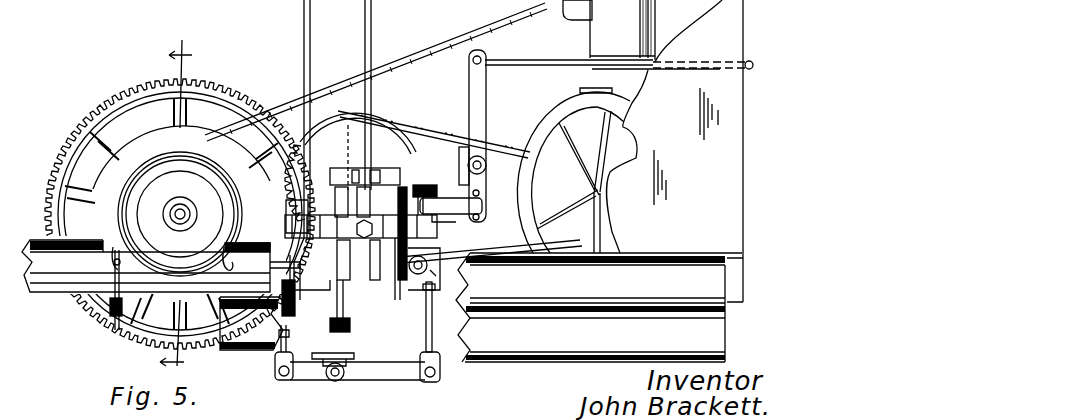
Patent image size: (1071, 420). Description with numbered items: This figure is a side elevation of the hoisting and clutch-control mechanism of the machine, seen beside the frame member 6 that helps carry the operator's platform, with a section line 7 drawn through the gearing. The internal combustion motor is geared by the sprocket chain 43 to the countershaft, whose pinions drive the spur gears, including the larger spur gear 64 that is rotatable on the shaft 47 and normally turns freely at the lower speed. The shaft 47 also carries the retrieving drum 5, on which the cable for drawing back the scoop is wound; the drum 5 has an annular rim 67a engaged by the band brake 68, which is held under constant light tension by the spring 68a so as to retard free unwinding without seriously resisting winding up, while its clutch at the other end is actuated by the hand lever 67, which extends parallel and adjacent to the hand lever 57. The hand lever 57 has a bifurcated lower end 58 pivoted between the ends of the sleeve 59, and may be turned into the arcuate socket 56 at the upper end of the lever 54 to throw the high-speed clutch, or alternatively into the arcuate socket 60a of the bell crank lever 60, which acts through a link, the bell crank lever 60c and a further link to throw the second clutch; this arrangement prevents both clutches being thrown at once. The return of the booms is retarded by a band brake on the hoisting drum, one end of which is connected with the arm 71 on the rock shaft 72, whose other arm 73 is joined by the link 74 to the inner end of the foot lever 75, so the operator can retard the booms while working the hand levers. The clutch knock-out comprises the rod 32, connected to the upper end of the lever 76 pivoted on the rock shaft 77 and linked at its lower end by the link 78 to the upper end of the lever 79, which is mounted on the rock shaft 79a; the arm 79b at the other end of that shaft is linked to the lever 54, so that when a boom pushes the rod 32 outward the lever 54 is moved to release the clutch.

The drum 5 is at (155, 140).
The frame member 6 is at (52, 280).
The section line 7 is at (176, 204).
The rod 32 is at (570, 56).
The sprocket chain 43 is at (452, 130).
The shaft 47 is at (180, 205).
The lever 54 is at (380, 285).
The arcuate socket 56 is at (383, 180).
The hand lever 57 is at (372, 32).
The bifurcated lower end 58 is at (370, 278).
The sleeve 59 is at (386, 324).
The bell crank lever 60 is at (320, 202).
The arcuate socket 60a is at (346, 119).
The bell crank lever 60c is at (346, 284).
The spur gear 64 is at (105, 108).
The hand lever 67 is at (304, 15).
The annular rim 67a is at (170, 272).
The band brake 68 is at (115, 206).
The spring 68a is at (112, 312).
The arm 71 is at (312, 378).
The rock shaft 72 is at (336, 382).
The arm 73 is at (392, 380).
The link 74 is at (436, 320).
The foot lever 75 is at (420, 185).
The lever 76 is at (486, 95).
The rock shaft 77 is at (480, 166).
The link 78 is at (460, 214).
The lever 79 is at (440, 265).
The rock shaft 79a is at (432, 292).
The arm 79b is at (398, 282).